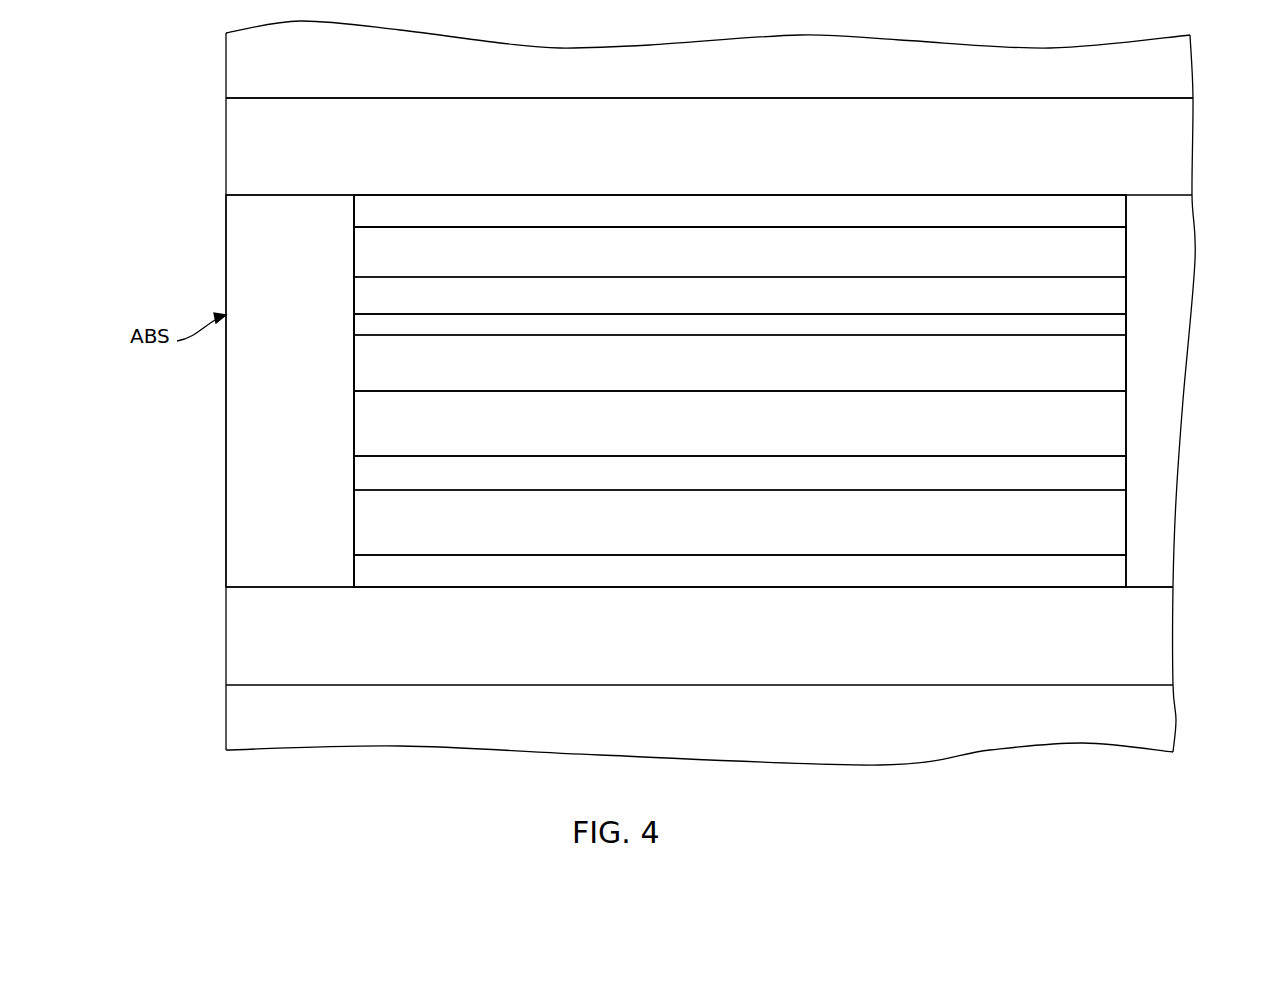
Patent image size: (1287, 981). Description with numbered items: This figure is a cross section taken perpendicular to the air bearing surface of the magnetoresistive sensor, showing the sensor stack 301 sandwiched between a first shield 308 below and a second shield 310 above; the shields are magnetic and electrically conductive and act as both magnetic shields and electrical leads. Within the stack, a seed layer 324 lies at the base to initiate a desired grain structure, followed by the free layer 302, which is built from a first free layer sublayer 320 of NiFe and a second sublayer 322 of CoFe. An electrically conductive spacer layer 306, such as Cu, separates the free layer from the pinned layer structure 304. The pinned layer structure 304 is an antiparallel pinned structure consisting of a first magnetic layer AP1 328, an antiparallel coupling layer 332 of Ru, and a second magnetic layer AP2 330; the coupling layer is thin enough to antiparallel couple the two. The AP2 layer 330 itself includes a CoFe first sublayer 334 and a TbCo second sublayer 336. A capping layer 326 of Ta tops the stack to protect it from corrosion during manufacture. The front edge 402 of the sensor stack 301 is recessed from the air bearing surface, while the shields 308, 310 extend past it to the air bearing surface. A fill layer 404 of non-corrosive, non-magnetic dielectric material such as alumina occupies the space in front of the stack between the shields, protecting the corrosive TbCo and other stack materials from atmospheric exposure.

The sensor stack 301 is at (884, 196).
The free layer 302 is at (1137, 553).
The pinned layer structure 304 is at (1141, 392).
The spacer layer 306 is at (740, 423).
The first shield 308 is at (885, 628).
The second shield 310 is at (709, 146).
The first free layer sublayer 320 is at (740, 522).
The second free layer sublayer 322 is at (740, 473).
The seed layer 324 is at (740, 571).
The capping layer 326 is at (740, 211).
The first magnetic layer (AP1) 328 is at (740, 363).
The second magnetic layer (AP2) 330 is at (354, 314).
The antiparallel coupling layer 332 is at (886, 324).
The first sublayer of AP2 334 is at (740, 295).
The second sublayer of AP2 336 is at (740, 252).
The front edge 402 is at (353, 447).
The fill layer 404 is at (1200, 221).